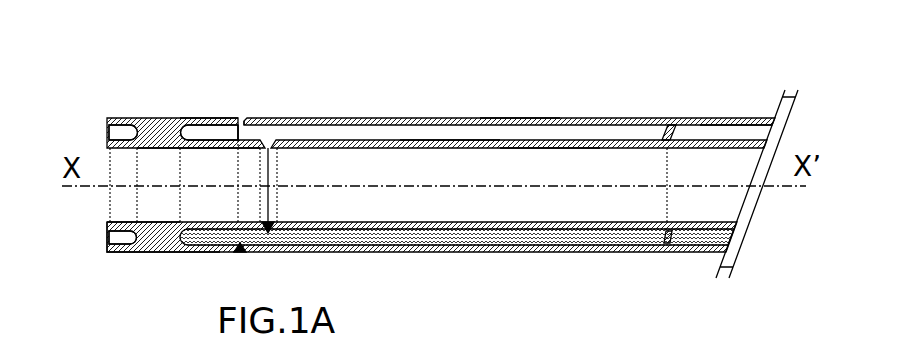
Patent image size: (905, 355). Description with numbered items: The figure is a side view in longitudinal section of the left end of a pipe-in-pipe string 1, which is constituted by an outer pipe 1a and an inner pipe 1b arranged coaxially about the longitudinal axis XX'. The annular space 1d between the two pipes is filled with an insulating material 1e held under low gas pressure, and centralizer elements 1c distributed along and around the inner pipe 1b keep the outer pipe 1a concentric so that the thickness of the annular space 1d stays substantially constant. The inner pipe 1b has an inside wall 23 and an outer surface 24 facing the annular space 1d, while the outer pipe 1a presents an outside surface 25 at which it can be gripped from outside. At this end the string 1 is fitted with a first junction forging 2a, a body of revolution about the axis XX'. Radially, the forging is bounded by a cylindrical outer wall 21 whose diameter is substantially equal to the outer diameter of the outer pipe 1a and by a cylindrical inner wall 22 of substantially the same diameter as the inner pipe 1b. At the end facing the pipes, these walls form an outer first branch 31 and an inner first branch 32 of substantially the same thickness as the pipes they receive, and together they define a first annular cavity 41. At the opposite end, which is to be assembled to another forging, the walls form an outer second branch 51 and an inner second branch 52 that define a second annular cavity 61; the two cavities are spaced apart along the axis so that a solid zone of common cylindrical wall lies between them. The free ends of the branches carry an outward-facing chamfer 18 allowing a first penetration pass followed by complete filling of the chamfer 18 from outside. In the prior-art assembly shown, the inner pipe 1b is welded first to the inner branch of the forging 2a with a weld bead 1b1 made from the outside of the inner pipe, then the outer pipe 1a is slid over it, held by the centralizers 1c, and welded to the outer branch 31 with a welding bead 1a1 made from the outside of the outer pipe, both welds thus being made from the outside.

The PiP type pipe 1 is at (356, 91).
The outer pipe 1a is at (578, 119).
The inner pipe 1b is at (488, 149).
The centralizer elements 1c is at (672, 130).
The annular space 1d is at (744, 133).
The insulating material 1e is at (414, 252).
The welding bead 1a1 is at (240, 252).
The weld bead 1b1 is at (278, 250).
The first junction forging 2a is at (170, 119).
The outer wall 21 is at (169, 253).
The inner wall 22 is at (164, 149).
The inside wall 23 is at (522, 149).
The inner layer outer surface 24 is at (452, 140).
The outside surface 25 is at (517, 119).
The outer first branch 31 is at (228, 119).
The inner first branch 32 is at (214, 149).
The first annular cavity 41 is at (196, 126).
The outer second branch 51 is at (111, 253).
The inner second branch 52 is at (110, 223).
The second annular cavity 61 is at (113, 136).
The chamfer 18 is at (241, 122).